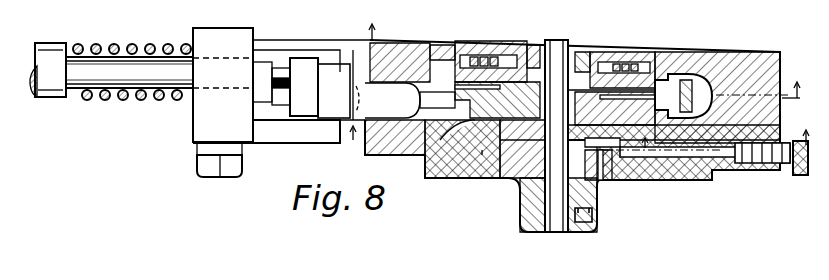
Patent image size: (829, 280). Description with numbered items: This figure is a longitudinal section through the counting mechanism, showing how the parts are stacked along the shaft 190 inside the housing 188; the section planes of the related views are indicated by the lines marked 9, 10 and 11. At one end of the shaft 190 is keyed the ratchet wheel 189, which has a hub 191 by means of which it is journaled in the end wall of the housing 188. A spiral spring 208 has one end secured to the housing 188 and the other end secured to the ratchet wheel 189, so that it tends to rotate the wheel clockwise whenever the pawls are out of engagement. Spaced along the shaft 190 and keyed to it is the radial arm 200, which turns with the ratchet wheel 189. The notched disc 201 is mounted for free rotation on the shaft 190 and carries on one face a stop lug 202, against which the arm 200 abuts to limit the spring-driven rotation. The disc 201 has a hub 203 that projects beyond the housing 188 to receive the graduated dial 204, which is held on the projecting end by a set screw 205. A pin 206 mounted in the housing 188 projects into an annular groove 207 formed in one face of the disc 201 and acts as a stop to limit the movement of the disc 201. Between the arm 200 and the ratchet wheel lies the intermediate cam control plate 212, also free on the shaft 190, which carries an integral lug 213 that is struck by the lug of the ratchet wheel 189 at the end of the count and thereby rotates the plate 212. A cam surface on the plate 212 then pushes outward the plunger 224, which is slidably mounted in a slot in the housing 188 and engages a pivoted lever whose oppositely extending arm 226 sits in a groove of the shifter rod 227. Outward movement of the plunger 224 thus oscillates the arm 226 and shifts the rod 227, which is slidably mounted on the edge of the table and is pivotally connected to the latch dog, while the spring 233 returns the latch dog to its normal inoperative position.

The spring 233 is at (113, 48).
The shifter rod 227 is at (264, 68).
The arm 226 is at (303, 60).
The section line 10 is at (585, 55).
The lug 213 is at (455, 45).
The spiral spring 208 is at (472, 48).
The shaft 190 is at (560, 46).
The hub 191 is at (584, 50).
The ratchet wheel 189 is at (656, 33).
The cam control plate 212 is at (705, 52).
The housing 188 is at (714, 56).
The section line 11 is at (645, 143).
The section line 9 is at (498, 139).
The plunger 224 is at (404, 156).
The radial arm 200 is at (452, 178).
The annular groove 207 is at (497, 178).
The graduated dial 204 is at (520, 209).
The hub 203 is at (540, 232).
The set screw 205 is at (596, 215).
The pin 206 is at (618, 182).
The notched disc 201 is at (655, 185).
The stop lug 202 is at (700, 182).